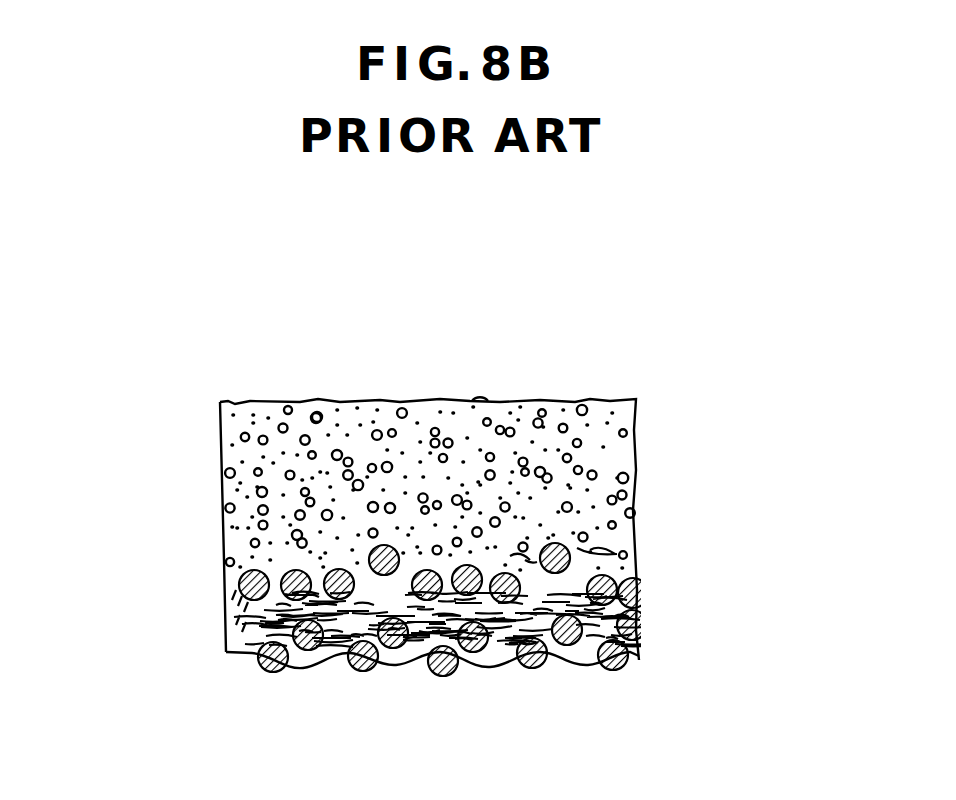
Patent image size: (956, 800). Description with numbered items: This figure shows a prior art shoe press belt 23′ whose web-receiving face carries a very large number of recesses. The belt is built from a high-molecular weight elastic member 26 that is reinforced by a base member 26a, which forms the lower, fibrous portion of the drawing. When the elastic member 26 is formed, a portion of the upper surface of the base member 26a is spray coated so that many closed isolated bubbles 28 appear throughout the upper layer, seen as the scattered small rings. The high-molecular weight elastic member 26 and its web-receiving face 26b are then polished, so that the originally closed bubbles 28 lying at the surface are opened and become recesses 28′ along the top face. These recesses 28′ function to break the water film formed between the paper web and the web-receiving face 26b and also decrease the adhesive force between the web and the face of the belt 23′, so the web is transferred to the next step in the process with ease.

The belt 23′ is at (698, 304).
The high-molecular weight elastic member 26 is at (203, 412).
The base member 26a is at (657, 545).
The web-receiving face 26b is at (378, 400).
The closed isolated bubbles 28 is at (312, 414).
The recesses 28′ is at (511, 312).